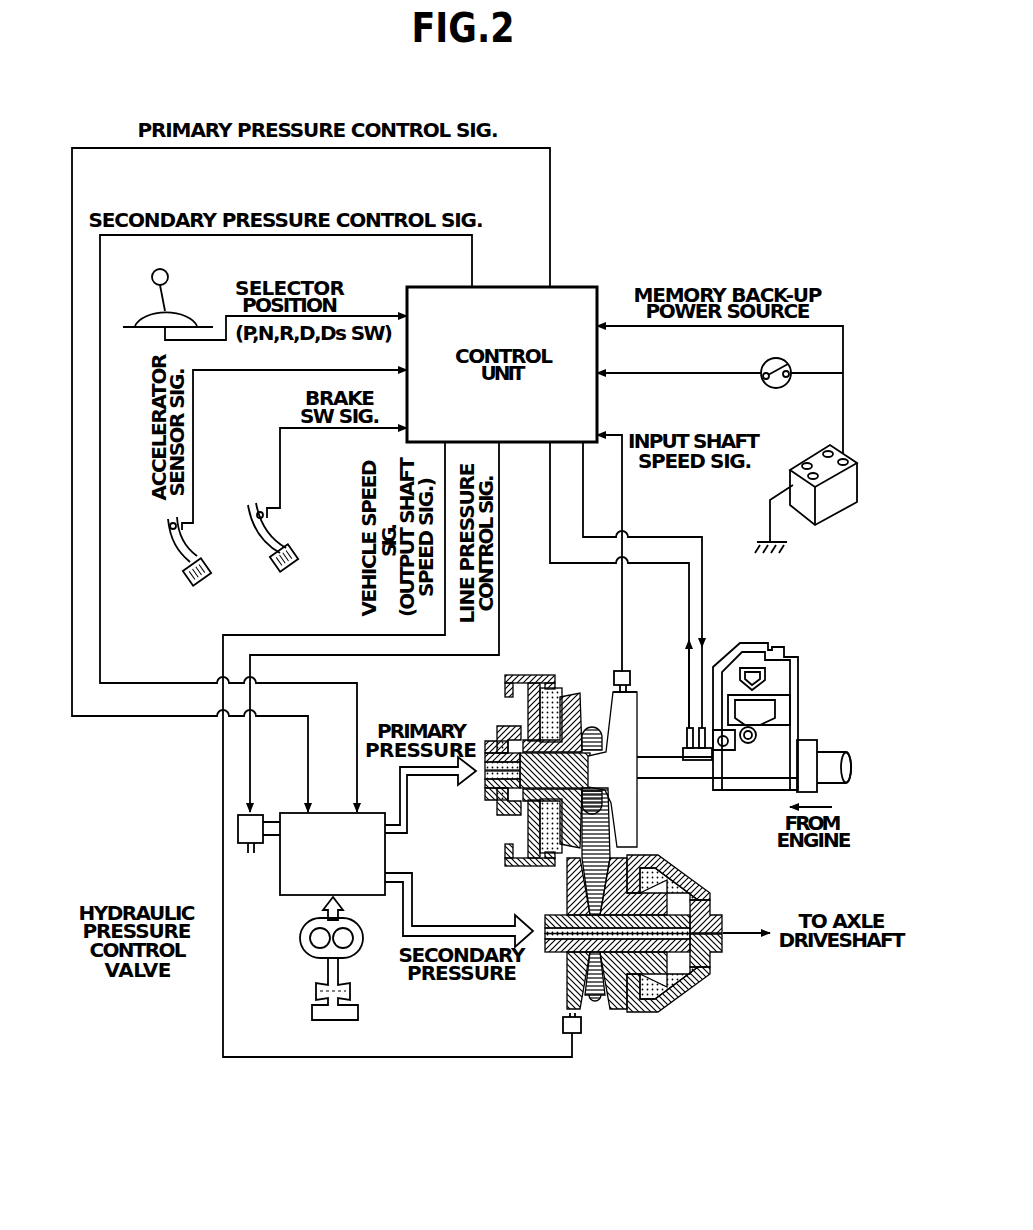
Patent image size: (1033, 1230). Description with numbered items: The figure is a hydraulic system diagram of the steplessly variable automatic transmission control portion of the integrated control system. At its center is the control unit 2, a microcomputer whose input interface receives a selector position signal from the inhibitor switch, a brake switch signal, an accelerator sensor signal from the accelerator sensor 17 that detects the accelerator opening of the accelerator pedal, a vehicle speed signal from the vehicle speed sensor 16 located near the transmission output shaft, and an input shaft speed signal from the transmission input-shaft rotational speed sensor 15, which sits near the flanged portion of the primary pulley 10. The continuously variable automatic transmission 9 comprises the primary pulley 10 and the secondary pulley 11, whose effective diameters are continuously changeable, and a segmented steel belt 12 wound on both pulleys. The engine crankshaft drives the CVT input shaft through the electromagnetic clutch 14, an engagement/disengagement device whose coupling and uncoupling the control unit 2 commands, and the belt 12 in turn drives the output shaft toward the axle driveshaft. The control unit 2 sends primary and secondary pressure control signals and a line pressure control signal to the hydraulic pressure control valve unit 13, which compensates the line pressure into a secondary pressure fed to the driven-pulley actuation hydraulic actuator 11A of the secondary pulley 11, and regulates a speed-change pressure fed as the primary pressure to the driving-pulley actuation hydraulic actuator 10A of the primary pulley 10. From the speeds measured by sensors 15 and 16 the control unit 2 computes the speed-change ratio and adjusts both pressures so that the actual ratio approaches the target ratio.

The control unit 2 is at (517, 331).
The continuously variable automatic transmission 9 is at (624, 737).
The primary pulley 10 is at (692, 759).
The driving-pulley actuation hydraulic actuator 10A is at (527, 770).
The secondary pulley 11 is at (652, 926).
The driven-pulley actuation hydraulic actuator 11A is at (652, 933).
The segmented steel belt 12 is at (634, 894).
The hydraulic pressure control valve unit 13 is at (351, 888).
The electromagnetic clutch 14 is at (767, 693).
The transmission input-shaft rotational speed sensor 15 is at (646, 651).
The vehicle speed sensor 16 is at (608, 1035).
The accelerator sensor 17 is at (161, 551).